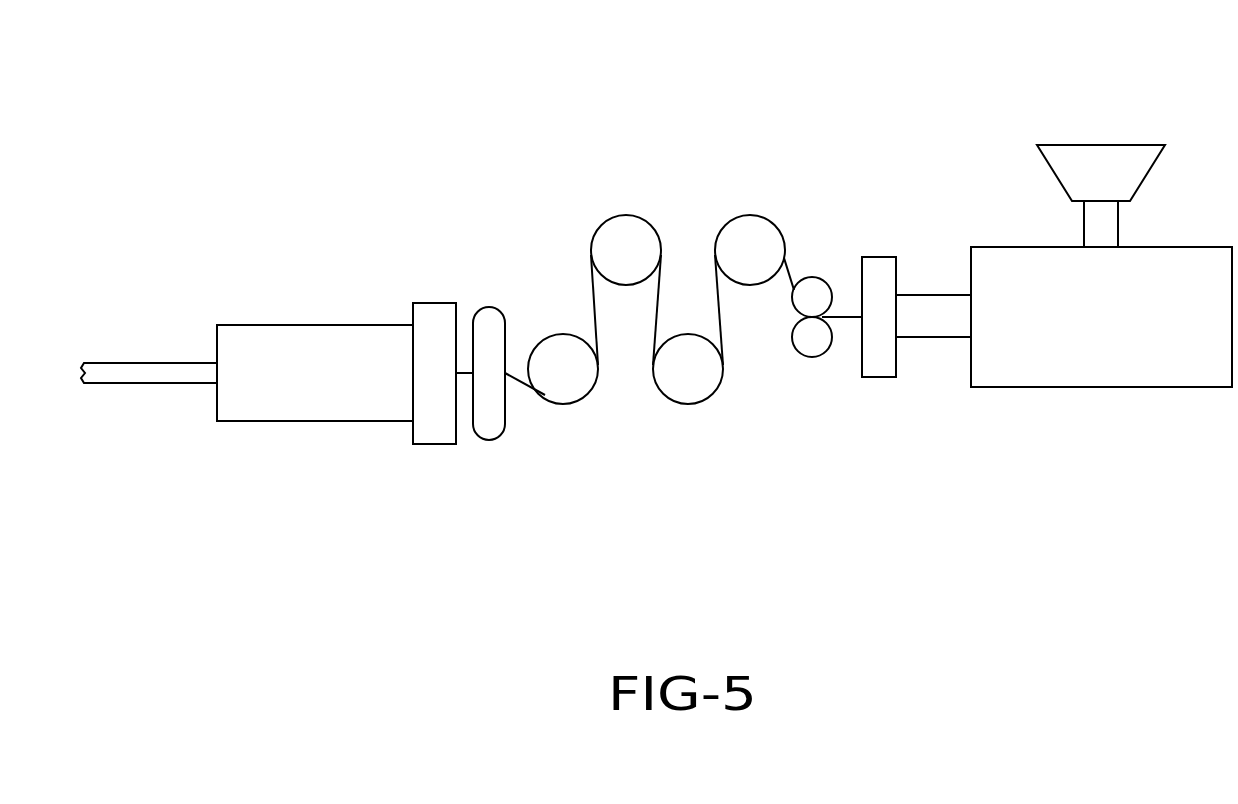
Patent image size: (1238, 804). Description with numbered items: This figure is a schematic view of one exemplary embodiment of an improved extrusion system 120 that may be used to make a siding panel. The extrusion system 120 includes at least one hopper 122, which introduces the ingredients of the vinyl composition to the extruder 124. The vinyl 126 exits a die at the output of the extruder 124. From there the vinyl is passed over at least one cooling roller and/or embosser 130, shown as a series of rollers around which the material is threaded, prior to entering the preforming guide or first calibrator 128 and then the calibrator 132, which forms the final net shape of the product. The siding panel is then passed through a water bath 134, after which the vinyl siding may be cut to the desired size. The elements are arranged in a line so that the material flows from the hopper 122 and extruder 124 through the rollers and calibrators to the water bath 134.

The extrusion system 120 is at (284, 156).
The hopper 122 is at (1122, 188).
The extruder 124 is at (1078, 332).
The vinyl 126 is at (846, 317).
The preforming guide or first calibrator 128 is at (495, 438).
The cooling roller and/or embosser 130 is at (678, 198).
The calibrator 132 is at (432, 444).
The water bath 134 is at (336, 388).